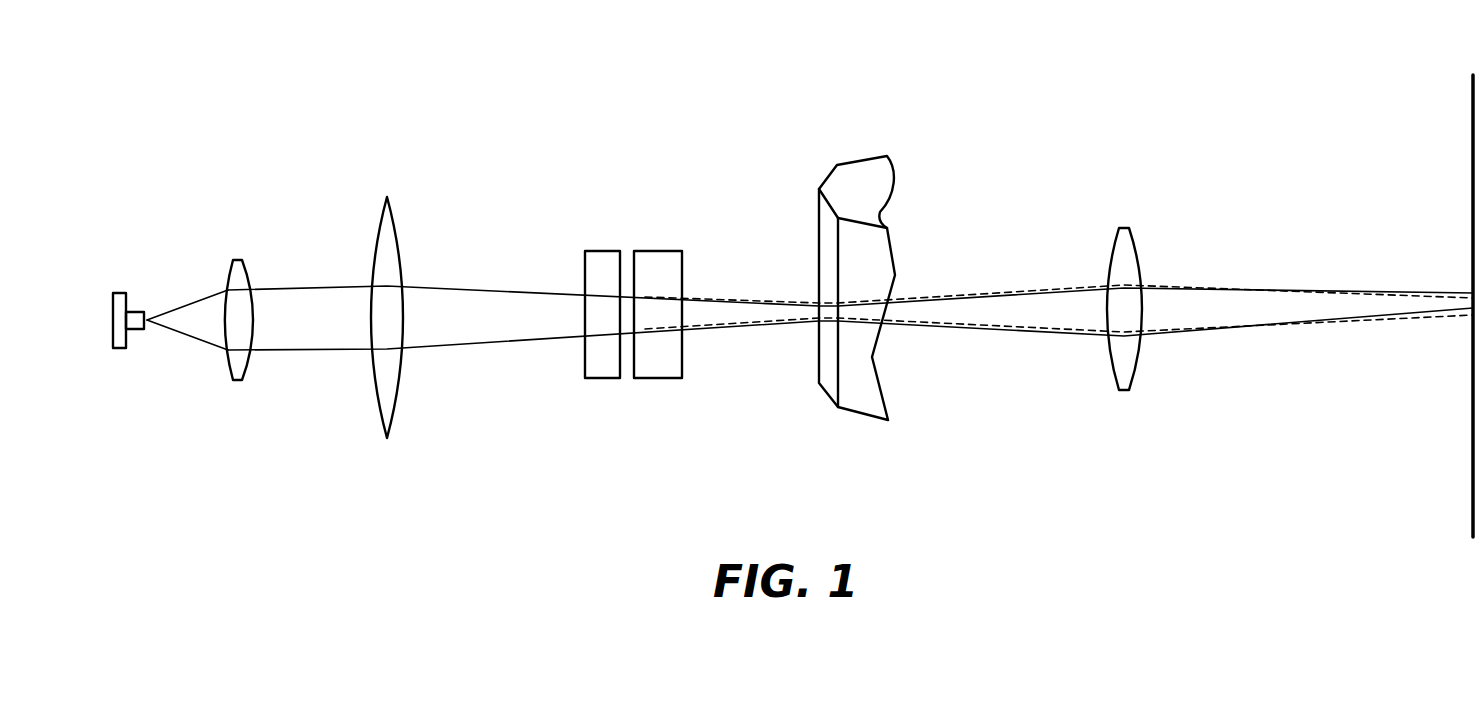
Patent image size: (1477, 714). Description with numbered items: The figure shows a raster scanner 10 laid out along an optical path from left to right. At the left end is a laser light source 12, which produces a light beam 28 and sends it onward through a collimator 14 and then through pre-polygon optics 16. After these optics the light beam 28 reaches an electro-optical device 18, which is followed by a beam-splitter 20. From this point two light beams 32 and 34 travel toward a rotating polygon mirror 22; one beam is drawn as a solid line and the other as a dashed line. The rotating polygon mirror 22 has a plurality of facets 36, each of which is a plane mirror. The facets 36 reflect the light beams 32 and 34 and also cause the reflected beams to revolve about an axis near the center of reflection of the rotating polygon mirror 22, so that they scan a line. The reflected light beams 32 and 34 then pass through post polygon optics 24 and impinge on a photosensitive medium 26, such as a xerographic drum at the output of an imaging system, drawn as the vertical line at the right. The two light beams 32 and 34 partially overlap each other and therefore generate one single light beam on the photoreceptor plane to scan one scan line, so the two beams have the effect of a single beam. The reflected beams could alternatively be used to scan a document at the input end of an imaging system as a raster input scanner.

The raster scanner 10 is at (537, 65).
The laser light source 12 is at (119, 288).
The collimator 14 is at (245, 267).
The pre-polygon optics 16 is at (393, 225).
The electro-optical device 18 is at (603, 248).
The beam-splitter 20 is at (657, 248).
The rotating polygon mirror 22 is at (856, 262).
The post polygon optics 24 is at (1137, 242).
The photosensitive medium 26 is at (1470, 223).
The light beam 28 is at (193, 338).
The light beam 32 is at (728, 323).
The light beam 34 is at (752, 318).
The facets 36 is at (828, 220).